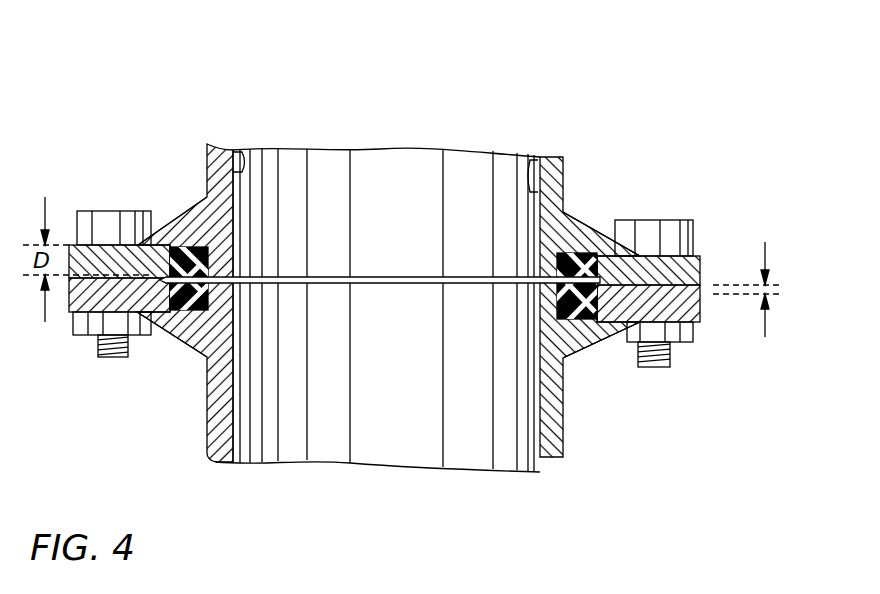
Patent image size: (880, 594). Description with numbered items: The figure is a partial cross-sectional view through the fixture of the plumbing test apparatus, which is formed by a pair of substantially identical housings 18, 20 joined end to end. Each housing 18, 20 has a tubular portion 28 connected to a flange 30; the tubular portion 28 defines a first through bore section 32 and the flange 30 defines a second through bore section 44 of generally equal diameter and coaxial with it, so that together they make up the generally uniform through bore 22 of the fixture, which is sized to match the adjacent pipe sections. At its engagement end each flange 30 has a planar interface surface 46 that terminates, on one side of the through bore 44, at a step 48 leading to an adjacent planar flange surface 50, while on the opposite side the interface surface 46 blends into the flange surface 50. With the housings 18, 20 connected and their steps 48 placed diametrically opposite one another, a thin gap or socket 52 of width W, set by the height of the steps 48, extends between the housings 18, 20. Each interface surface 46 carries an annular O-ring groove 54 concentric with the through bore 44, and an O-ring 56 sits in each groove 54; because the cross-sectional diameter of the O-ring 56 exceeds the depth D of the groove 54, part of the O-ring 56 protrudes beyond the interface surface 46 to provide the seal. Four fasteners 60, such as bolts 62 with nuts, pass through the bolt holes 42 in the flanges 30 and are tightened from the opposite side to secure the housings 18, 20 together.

The housing 18 is at (179, 254).
The housing 20 is at (369, 311).
The through bore 22 is at (378, 265).
The tubular portion 28 is at (216, 432).
The flange 30 is at (180, 332).
The first through bore section 32 is at (240, 150).
The bolt holes 42 is at (682, 308).
The second through bore section 44 is at (529, 172).
The interface surface 46 is at (166, 242).
The step 48 is at (140, 270).
The planar flange surface 50 is at (90, 325).
The gap 52 is at (410, 277).
The O-ring groove 54 is at (564, 353).
The O-ring 56 is at (590, 323).
The fasteners 60 is at (656, 262).
The bolt 62 is at (690, 234).